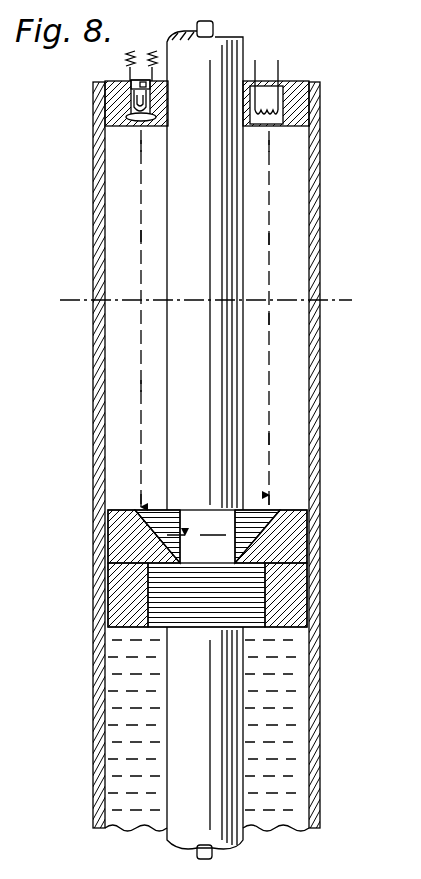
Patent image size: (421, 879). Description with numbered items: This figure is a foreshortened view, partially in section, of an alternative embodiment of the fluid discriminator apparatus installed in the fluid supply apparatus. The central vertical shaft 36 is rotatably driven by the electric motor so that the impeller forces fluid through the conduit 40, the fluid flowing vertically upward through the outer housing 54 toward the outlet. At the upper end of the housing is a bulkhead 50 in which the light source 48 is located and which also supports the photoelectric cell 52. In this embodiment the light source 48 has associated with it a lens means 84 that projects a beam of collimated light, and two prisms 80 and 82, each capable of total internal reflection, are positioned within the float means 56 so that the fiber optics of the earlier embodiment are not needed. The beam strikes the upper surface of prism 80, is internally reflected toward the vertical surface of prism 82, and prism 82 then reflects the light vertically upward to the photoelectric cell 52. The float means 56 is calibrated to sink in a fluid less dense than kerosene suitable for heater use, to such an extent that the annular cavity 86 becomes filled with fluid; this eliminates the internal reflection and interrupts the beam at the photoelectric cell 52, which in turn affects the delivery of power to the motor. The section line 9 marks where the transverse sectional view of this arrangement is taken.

The section line 9- 9 is at (43, 392).
The shaft 36 is at (213, 28).
The conduit 40 is at (248, 782).
The light source 48 is at (100, 100).
The bulkhead 50 is at (113, 81).
The photoelectric cell 52 is at (316, 108).
The outer housing 54 is at (95, 742).
The float means 56 is at (201, 558).
The prism 80 is at (130, 508).
The prism 82 is at (283, 508).
The lens means 84 is at (128, 130).
The annular cavity 86 is at (110, 578).